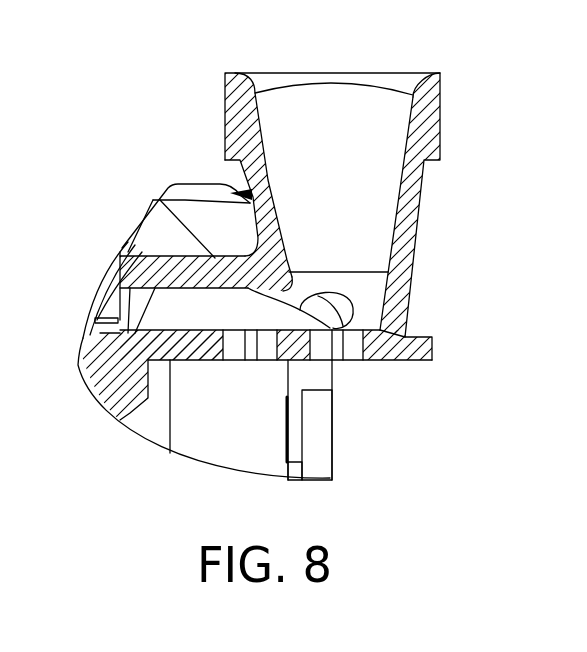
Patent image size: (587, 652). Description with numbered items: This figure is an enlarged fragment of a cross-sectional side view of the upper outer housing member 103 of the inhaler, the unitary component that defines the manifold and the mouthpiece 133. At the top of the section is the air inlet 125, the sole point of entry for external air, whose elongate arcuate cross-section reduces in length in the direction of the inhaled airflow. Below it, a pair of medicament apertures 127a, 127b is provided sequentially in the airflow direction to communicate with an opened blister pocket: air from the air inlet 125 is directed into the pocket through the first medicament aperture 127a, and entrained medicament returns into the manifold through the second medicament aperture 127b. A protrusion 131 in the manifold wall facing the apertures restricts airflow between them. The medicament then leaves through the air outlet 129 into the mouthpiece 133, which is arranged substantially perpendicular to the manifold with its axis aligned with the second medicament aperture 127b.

The upper outer housing member 103 is at (178, 110).
The air inlet 125 is at (330, 100).
The first medicament aperture 127a is at (210, 270).
The second medicament aperture 127b is at (185, 445).
The air outlet 129 is at (293, 418).
The protrusion 131 is at (310, 300).
The mouthpiece 133 is at (392, 424).